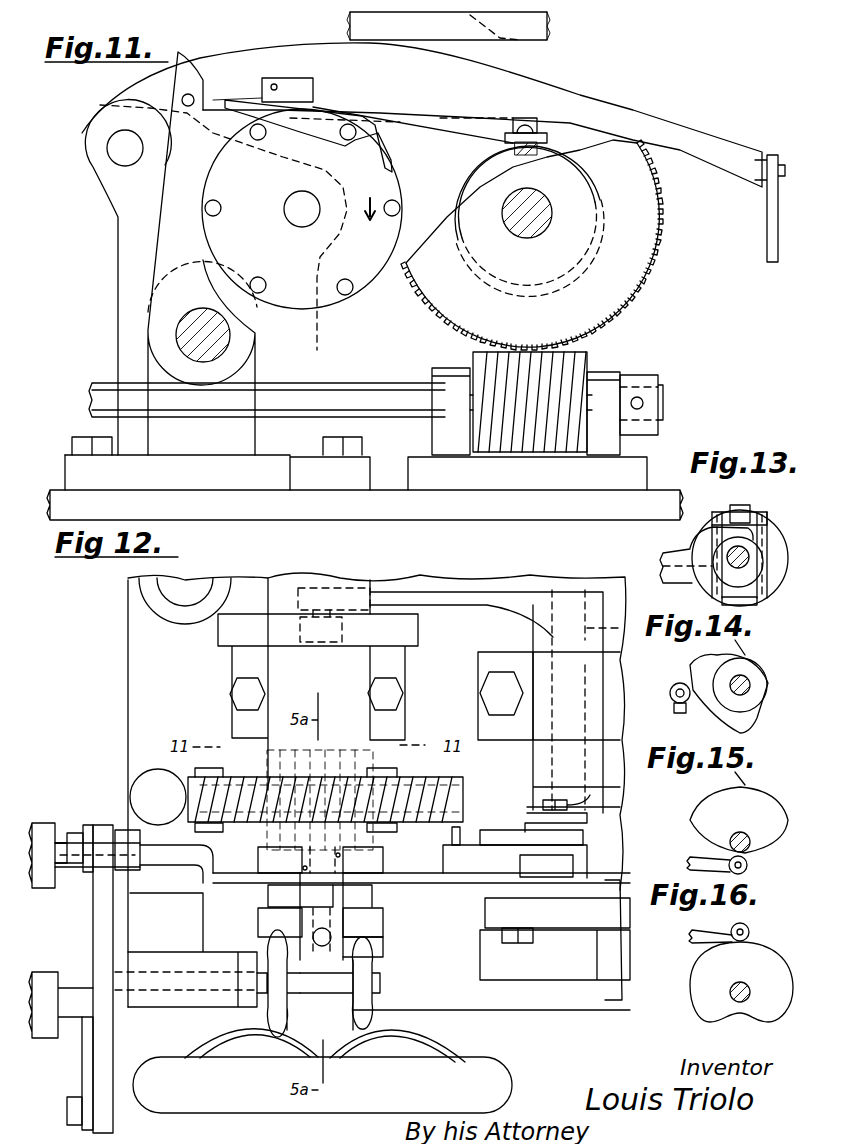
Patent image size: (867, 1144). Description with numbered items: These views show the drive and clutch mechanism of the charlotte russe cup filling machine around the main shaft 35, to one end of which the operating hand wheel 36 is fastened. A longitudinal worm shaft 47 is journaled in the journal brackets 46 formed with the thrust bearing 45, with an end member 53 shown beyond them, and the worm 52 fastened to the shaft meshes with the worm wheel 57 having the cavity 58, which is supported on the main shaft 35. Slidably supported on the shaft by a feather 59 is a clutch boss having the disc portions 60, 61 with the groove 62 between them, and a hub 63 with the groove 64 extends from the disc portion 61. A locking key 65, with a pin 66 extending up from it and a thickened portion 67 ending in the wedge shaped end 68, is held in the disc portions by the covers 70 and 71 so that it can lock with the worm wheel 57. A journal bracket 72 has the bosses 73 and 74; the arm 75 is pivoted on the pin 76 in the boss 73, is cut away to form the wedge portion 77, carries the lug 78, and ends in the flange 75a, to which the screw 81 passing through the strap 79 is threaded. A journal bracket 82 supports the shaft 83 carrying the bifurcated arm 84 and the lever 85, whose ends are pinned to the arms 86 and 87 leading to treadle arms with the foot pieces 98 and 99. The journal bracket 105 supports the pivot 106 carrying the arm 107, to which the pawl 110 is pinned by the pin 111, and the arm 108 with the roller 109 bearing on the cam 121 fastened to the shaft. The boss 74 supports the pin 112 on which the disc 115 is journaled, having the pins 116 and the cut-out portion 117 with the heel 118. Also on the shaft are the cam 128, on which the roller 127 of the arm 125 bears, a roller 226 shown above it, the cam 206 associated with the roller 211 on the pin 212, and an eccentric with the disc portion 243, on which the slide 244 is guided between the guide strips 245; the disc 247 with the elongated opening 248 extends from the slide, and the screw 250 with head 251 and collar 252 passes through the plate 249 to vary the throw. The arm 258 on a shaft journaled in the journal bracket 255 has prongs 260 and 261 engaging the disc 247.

In FIG. 11, the main shaft 35 is at (545, 213).
In FIG. 13, the main shaft 35 is at (738, 557).
In FIG. 14, the main shaft 35 is at (750, 688).
In FIG. 15, the main shaft 35 is at (748, 838).
In FIG. 16, the main shaft 35 is at (748, 990).
In FIG. 12, the operating hand wheel 36 is at (322, 1071).
In FIG. 11, the thrust bearing 45 is at (635, 478).
In FIG. 11, the journal brackets 46 is at (435, 380).
In FIG. 11, the longitudinal worm shaft 47 is at (350, 385).
In FIG. 12, the longitudinal worm shaft 47 is at (487, 792).
In FIG. 11, the worm 52 is at (480, 380).
In FIG. 11, the bearing 53 is at (660, 378).
In FIG. 11, the worm wheel 57 is at (532, 245).
In FIG. 12, the worm wheel 57 is at (207, 780).
In FIG. 12, the cavity 58 is at (345, 752).
In FIG. 11, the feather 59 is at (530, 194).
In FIG. 12, the disc portion 60 is at (443, 860).
In FIG. 11, the disc portion 61 is at (460, 186).
In FIG. 12, the disc portion 61 is at (383, 924).
In FIG. 11, the groove 62 is at (458, 206).
In FIG. 12, the groove 62 is at (372, 898).
In FIG. 12, the hub 63 is at (305, 958).
In FIG. 12, the groove 64 is at (265, 848).
In FIG. 11, the locking key 65 is at (518, 156).
In FIG. 12, the locking key 65 is at (300, 896).
In FIG. 11, the pin 66 is at (540, 118).
In FIG. 12, the pin 66 is at (348, 942).
In FIG. 11, the thickened portion 67 is at (548, 141).
In FIG. 11, the wedge shaped end 68 is at (505, 140).
In FIG. 12, the wedge shaped end 68 is at (352, 896).
In FIG. 12, the cover 70 is at (280, 860).
In FIG. 12, the cover 71 is at (280, 922).
In FIG. 11, the journal bracket 72 is at (75, 468).
In FIG. 12, the journal bracket 72 is at (491, 964).
In FIG. 11, the boss 73 is at (100, 170).
In FIG. 11, the boss 74 is at (360, 220).
In FIG. 12, the boss 74 is at (495, 932).
In FIG. 11, the arm 75 is at (355, 30).
In FIG. 12, the arm 75 is at (468, 888).
In FIG. 11, the flange 75a is at (772, 158).
In FIG. 12, the flange 75a is at (128, 810).
In FIG. 11, the pin 76 is at (118, 148).
In FIG. 11, the wedge portion 77 is at (505, 40).
In FIG. 12, the wedge portion 77 is at (363, 860).
In FIG. 11, the lug 78 is at (313, 100).
In FIG. 12, the lug 78 is at (546, 866).
In FIG. 11, the strap 79 is at (766, 230).
In FIG. 12, the strap 79 is at (120, 857).
In FIG. 12, the screw 81 is at (70, 830).
In FIG. 12, the journal bracket 82 is at (180, 1002).
In FIG. 12, the shaft 83 is at (118, 980).
In FIG. 12, the bifurcated arm 84 is at (277, 990).
In FIG. 12, the lever 85 is at (107, 1107).
In FIG. 12, the arm 86 is at (90, 872).
In FIG. 12, the arm 87 is at (83, 1080).
In FIG. 12, the foot piece 98 is at (45, 885).
In FIG. 12, the foot piece 99 is at (45, 1040).
In FIG. 12, the journal bracket 105 is at (478, 724).
In FIG. 11, the pivot 106 is at (180, 335).
In FIG. 12, the pivot 106 is at (553, 650).
In FIG. 11, the arm 107 is at (202, 253).
In FIG. 12, the arm 107 is at (543, 806).
In FIG. 12, the arm 108 is at (412, 598).
In FIG. 15, the arm 108 is at (690, 857).
In FIG. 12, the roller 109 is at (310, 645).
In FIG. 15, the roller 109 is at (748, 866).
In FIG. 11, the pawl 110 is at (233, 97).
In FIG. 12, the pawl 110 is at (487, 830).
In FIG. 11, the pin 111 is at (193, 95).
In FIG. 11, the pin 112 is at (296, 213).
In FIG. 11, the disc 115 is at (251, 227).
In FIG. 11, the pins 116 is at (280, 258).
In FIG. 12, the pins 116 is at (452, 835).
In FIG. 11, the cut-out portion 117 is at (380, 150).
In FIG. 11, the heel 118 is at (392, 170).
In FIG. 12, the cam 121 is at (418, 633).
In FIG. 15, the cam 121 is at (765, 845).
In FIG. 12, the arm 125 is at (638, 992).
In FIG. 15, the roller 127 is at (739, 812).
In FIG. 16, the roller 127 is at (750, 936).
In FIG. 16, the cam 128 is at (765, 1020).
In FIG. 14, the cam 206 is at (708, 716).
In FIG. 14, the roller 211 is at (677, 684).
In FIG. 14, the pin 212 is at (674, 708).
In FIG. 16, the roller 226 is at (734, 922).
In FIG. 13, the disc portion 243 is at (770, 530).
In FIG. 13, the slide 244 is at (690, 540).
In FIG. 13, the guide strips 245 is at (768, 535).
In FIG. 13, the disc 247 is at (760, 598).
In FIG. 13, the elongated opening 248 is at (765, 570).
In FIG. 13, the plate 249 is at (749, 506).
In FIG. 13, the screw 250 is at (712, 517).
In FIG. 13, the head 251 is at (735, 504).
In FIG. 13, the collar 252 is at (712, 510).
In FIG. 12, the journal bracket 255 is at (580, 582).
In FIG. 13, the arm 258 is at (685, 575).
In FIG. 13, the prong 260 is at (778, 548).
In FIG. 13, the prong 261 is at (760, 612).
In FIG. 14, the prong 261 is at (729, 686).